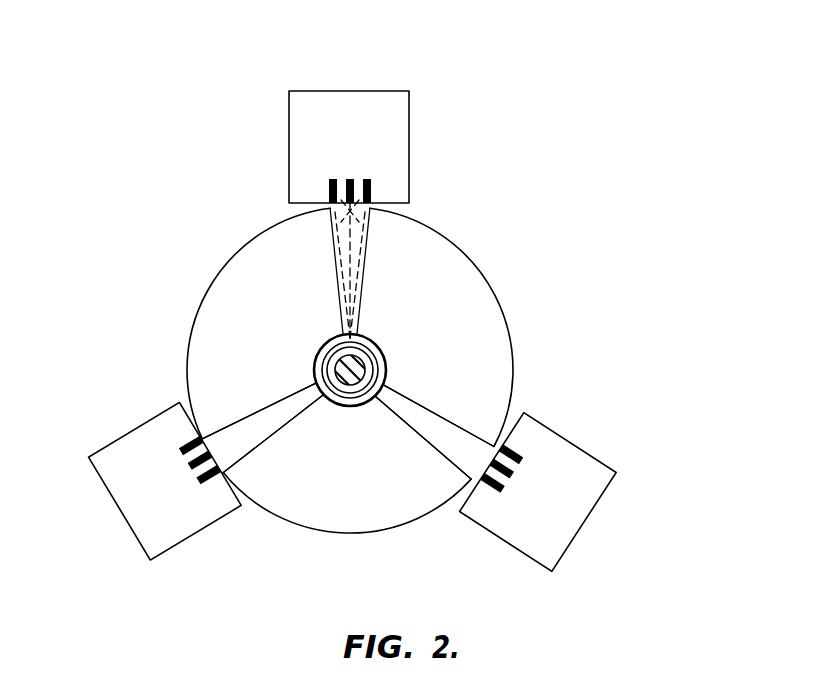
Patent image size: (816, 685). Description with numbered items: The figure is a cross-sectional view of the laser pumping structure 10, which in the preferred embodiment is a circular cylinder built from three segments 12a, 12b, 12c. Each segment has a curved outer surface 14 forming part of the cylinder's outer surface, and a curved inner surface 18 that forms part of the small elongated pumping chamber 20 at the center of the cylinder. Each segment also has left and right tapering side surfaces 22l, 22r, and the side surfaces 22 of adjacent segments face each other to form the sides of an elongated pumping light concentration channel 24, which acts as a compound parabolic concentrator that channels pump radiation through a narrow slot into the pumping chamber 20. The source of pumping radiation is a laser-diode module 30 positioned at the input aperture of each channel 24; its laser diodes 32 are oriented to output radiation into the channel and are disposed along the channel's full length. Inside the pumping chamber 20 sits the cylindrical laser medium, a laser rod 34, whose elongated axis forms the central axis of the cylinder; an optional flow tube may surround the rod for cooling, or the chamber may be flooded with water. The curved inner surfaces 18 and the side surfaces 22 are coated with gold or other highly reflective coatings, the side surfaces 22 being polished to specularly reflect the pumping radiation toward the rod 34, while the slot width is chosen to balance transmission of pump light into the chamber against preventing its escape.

The laser pumping structure 10 is at (544, 341).
The segment 12a is at (437, 283).
The segment 12b is at (410, 493).
The segment 12c is at (270, 318).
The curved outer surface 14 is at (327, 386).
The curved inner surface 18 is at (165, 312).
The elongated pumping chamber 20 is at (331, 400).
The tapering side surfaces 22 is at (328, 260).
The left tapering side surface 22l is at (338, 298).
The right tapering side surface 22r is at (360, 297).
The pumping light concentration channel 24 is at (258, 452).
The laser-diode module 30 is at (343, 58).
The laser diodes 32 is at (369, 186).
The laser rod 34 is at (386, 345).